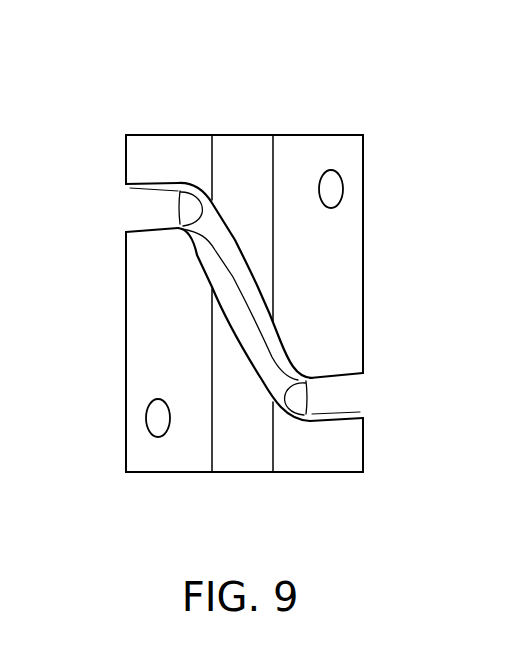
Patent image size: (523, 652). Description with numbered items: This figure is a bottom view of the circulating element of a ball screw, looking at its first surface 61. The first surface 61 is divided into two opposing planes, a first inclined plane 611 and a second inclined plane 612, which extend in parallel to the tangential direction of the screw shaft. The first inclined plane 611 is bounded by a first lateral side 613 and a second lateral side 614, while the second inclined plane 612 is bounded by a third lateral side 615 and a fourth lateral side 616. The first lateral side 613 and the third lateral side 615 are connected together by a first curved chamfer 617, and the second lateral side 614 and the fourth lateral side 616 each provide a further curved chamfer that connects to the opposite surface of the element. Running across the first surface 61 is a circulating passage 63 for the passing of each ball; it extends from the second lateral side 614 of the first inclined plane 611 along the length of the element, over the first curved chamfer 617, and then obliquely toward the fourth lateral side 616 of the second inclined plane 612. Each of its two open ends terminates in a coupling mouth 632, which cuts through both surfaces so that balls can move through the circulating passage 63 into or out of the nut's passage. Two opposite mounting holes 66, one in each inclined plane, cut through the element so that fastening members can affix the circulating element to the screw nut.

The first surface 61 is at (172, 57).
The first inclined plane 611 is at (298, 157).
The second inclined plane 612 is at (180, 153).
The first lateral side 613 is at (275, 448).
The second lateral side 614 is at (363, 335).
The third lateral side 615 is at (211, 441).
The fourth lateral side 616 is at (126, 322).
The first curved chamfer 617 is at (246, 452).
The circulating passage 63 is at (252, 302).
The coupling mouth 632 is at (146, 212).
The mounting hole 66 is at (333, 191).